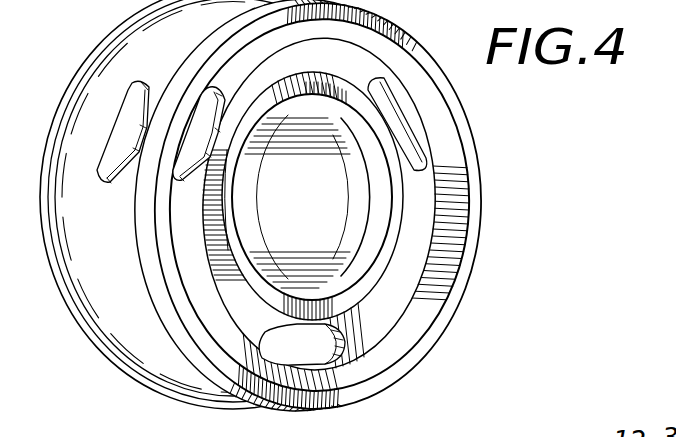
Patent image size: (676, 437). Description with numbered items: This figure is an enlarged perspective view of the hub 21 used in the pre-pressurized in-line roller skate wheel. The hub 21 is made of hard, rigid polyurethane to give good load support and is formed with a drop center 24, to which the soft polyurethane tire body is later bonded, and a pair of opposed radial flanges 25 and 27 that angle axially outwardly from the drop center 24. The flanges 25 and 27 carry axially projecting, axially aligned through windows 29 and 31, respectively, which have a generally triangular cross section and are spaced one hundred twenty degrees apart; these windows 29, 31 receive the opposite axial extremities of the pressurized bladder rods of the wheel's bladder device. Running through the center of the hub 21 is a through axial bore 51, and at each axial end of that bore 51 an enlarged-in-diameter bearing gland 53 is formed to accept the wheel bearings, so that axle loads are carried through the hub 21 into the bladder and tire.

The hub 21 is at (449, 341).
The drop center 24 is at (135, 257).
The radial flange 25 is at (97, 49).
The radial flange 27 is at (478, 169).
The through window 29 is at (145, 80).
The through window 31 is at (222, 97).
The through axial bore 51 is at (318, 216).
The bearing gland 53 is at (440, 238).